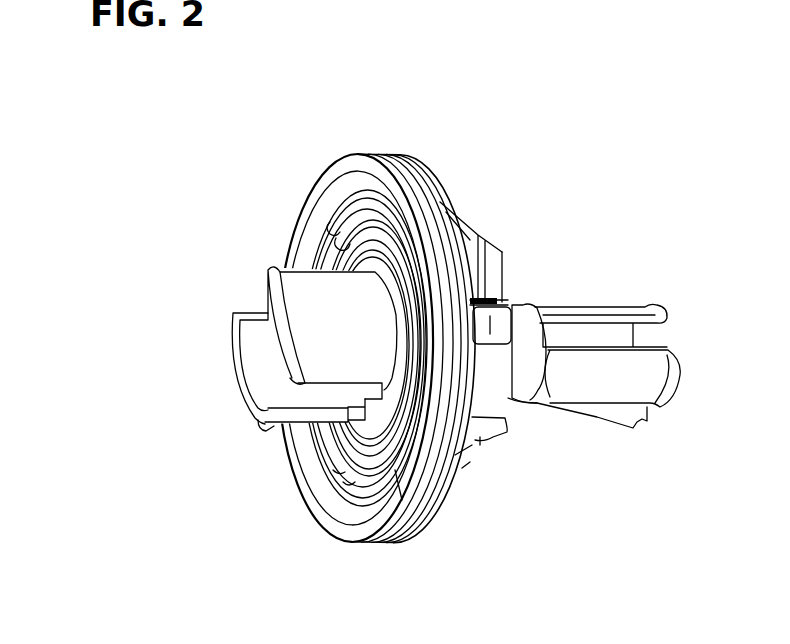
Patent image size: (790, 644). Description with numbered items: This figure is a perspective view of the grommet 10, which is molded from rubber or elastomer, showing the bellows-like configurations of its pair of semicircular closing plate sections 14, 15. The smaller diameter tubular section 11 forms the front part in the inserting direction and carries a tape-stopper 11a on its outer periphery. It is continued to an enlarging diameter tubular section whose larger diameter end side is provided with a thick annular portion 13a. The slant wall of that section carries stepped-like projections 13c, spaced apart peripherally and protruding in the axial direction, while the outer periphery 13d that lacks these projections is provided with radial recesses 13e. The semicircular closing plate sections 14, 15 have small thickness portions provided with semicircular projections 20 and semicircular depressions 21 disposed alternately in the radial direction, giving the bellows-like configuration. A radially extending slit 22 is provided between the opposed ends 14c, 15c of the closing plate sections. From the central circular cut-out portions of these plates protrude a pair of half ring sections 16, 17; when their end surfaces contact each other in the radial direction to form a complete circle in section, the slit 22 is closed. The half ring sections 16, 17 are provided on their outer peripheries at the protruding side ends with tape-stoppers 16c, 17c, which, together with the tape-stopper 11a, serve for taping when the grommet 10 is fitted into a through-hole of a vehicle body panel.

The grommet 10 is at (118, 127).
The smaller diameter tubular section 11 is at (603, 308).
The tape-stopper 11a is at (637, 423).
The annular portion 13a is at (415, 185).
The stepped-like projections 13c is at (498, 254).
The outer periphery 13d is at (475, 247).
The radial recesses 13e is at (487, 390).
The semicircular closing plate section 14 is at (413, 184).
The opposed end 14c is at (450, 427).
The semicircular closing plate section 15 is at (327, 460).
The opposed end 15c is at (407, 485).
The half ring section 16 is at (268, 294).
The tape-stopper 16c is at (325, 315).
The half ring section 17 is at (255, 365).
The tape-stopper 17c is at (267, 430).
The semicircular projections 20 is at (357, 226).
The semicircular depressions 21 is at (323, 212).
The slit 22 is at (438, 470).